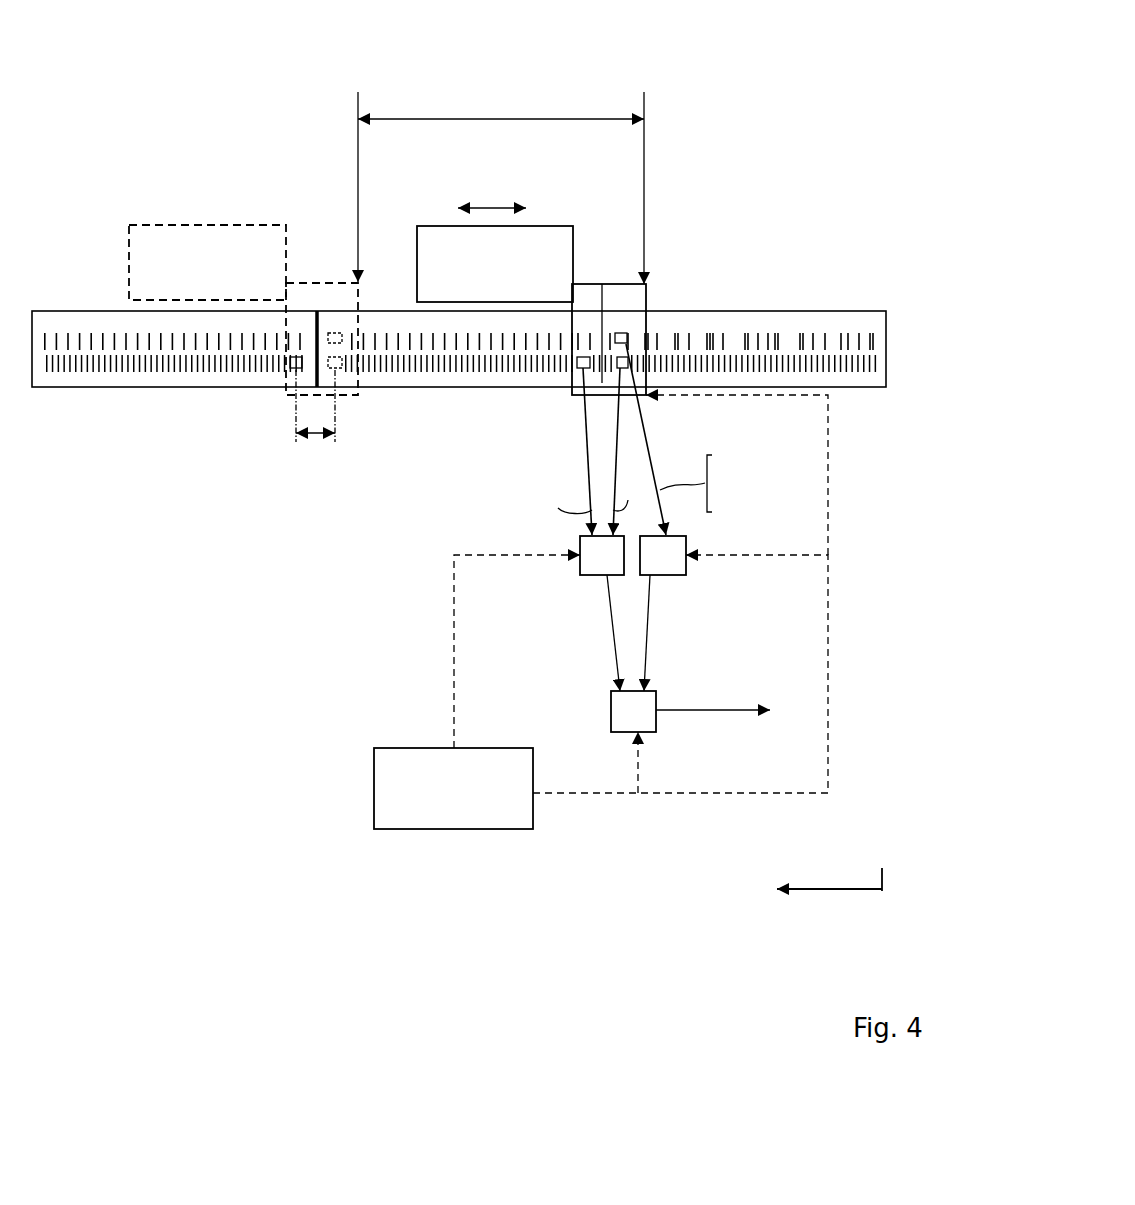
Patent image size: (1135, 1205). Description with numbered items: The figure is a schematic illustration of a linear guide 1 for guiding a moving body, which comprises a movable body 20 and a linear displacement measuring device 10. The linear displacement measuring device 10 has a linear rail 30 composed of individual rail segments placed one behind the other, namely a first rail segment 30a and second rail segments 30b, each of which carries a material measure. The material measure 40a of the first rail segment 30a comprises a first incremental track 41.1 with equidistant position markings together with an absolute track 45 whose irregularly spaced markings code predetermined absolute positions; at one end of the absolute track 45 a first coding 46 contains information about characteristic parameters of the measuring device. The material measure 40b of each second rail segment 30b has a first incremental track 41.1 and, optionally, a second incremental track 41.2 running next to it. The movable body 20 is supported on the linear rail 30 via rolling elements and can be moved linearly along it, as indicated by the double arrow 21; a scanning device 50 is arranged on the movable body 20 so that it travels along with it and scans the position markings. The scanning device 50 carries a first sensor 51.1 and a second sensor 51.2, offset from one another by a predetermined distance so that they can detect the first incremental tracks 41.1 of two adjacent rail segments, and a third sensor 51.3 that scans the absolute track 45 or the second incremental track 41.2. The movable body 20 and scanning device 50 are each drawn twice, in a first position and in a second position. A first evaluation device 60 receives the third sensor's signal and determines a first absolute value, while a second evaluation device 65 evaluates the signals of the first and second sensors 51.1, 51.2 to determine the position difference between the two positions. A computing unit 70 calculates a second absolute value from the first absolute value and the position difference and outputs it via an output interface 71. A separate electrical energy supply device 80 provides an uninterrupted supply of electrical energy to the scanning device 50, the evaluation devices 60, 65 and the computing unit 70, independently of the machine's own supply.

The linear guide 1 is at (833, 24).
The linear displacement measuring device 10 is at (663, 268).
The movable body 20 is at (226, 277).
The double arrow 21 is at (492, 189).
The linear rail 30 is at (493, 324).
The first rail segment 30a is at (758, 329).
The second rail segment 30b is at (493, 324).
The material measure of the first rail segment 40a is at (851, 377).
The material measure of the second rail segment 40b is at (493, 407).
The first incremental track 41.1 is at (195, 358).
The second incremental track 41.2 is at (250, 338).
The absolute track 45 is at (872, 335).
The first coding 46 is at (606, 330).
The scanning device 50 is at (532, 269).
The first sensor 51.1 is at (618, 368).
The second sensor 51.2 is at (578, 367).
The third sensor 51.3 is at (627, 338).
The first evaluation device 60 is at (677, 568).
The second evaluation device 65 is at (616, 568).
The computing unit 70 is at (647, 724).
The output interface 71 is at (657, 710).
The electrical energy supply device 80 is at (468, 798).